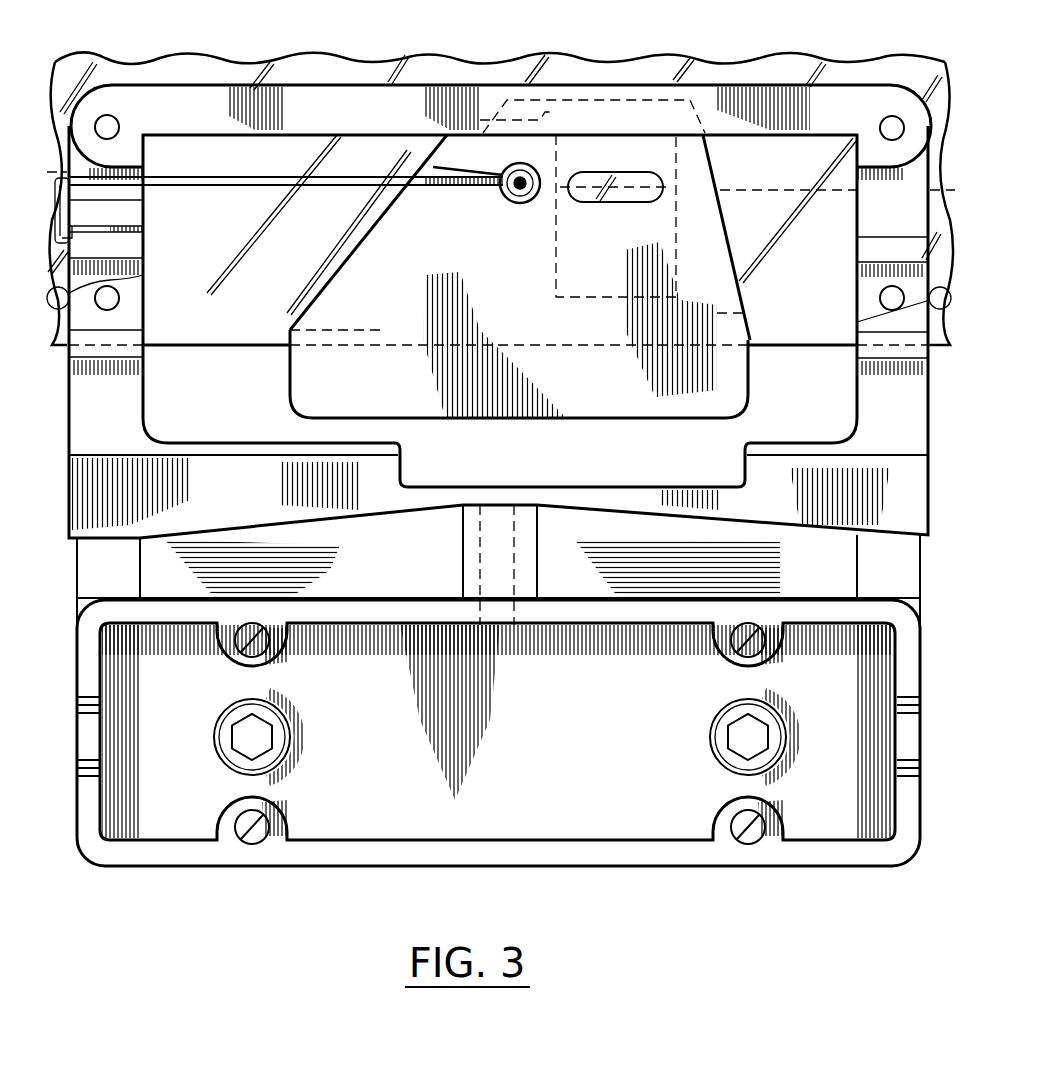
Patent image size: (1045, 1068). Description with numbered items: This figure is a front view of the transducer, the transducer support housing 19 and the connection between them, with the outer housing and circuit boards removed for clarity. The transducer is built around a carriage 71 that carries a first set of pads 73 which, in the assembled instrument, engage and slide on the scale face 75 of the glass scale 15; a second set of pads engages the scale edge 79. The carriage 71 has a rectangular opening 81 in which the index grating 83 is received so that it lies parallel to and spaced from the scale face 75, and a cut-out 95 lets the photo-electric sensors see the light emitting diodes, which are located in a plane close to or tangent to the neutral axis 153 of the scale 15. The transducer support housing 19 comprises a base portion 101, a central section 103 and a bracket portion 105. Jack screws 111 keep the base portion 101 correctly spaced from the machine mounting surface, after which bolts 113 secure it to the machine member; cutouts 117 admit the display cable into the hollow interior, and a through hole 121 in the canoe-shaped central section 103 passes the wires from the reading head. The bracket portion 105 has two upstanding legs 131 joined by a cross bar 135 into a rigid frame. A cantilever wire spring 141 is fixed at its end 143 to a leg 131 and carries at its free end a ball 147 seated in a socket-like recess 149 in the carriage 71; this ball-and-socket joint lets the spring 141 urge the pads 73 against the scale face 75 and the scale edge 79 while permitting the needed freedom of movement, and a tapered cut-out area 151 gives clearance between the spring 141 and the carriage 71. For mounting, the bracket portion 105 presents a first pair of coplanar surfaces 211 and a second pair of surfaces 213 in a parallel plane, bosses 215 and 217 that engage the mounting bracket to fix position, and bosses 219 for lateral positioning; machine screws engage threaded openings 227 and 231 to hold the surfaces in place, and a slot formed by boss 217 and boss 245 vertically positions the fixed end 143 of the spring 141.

The scale 15 is at (476, 52).
The transducer support housing 19 is at (498, 759).
The carriage 71 is at (478, 322).
The first set of pads 73 is at (560, 117).
The scale face 75 is at (258, 276).
The scale edge 79 is at (246, 348).
The rectangular opening 81 is at (555, 278).
The index grating 83 is at (605, 185).
The cut-out 95 is at (596, 195).
The base portion 101 is at (328, 866).
The central section 103 is at (386, 574).
The bracket portion 105 is at (150, 440).
The jack screws 111 is at (240, 655).
The bolts 113 is at (215, 722).
The cutouts 117 is at (93, 740).
The through hole 121 is at (512, 492).
The upstanding legs 131 is at (125, 404).
The cross bar 135 is at (303, 116).
The cantilever wire spring 141 is at (350, 187).
The fixed end of spring 143 is at (72, 198).
The ball 147 is at (515, 192).
The socket-like recess 149 is at (538, 203).
The tapered cut-out area 151 is at (422, 190).
The neutral axis 153 is at (760, 190).
The first pair of surfaces 211 is at (132, 327).
The second pair of surfaces 213 is at (143, 157).
The boss 215 is at (132, 358).
The boss 217 is at (132, 252).
The bosses 219 is at (132, 278).
The threaded opening 227 is at (121, 299).
The threaded opening 231 is at (121, 116).
The boss 245 is at (130, 216).